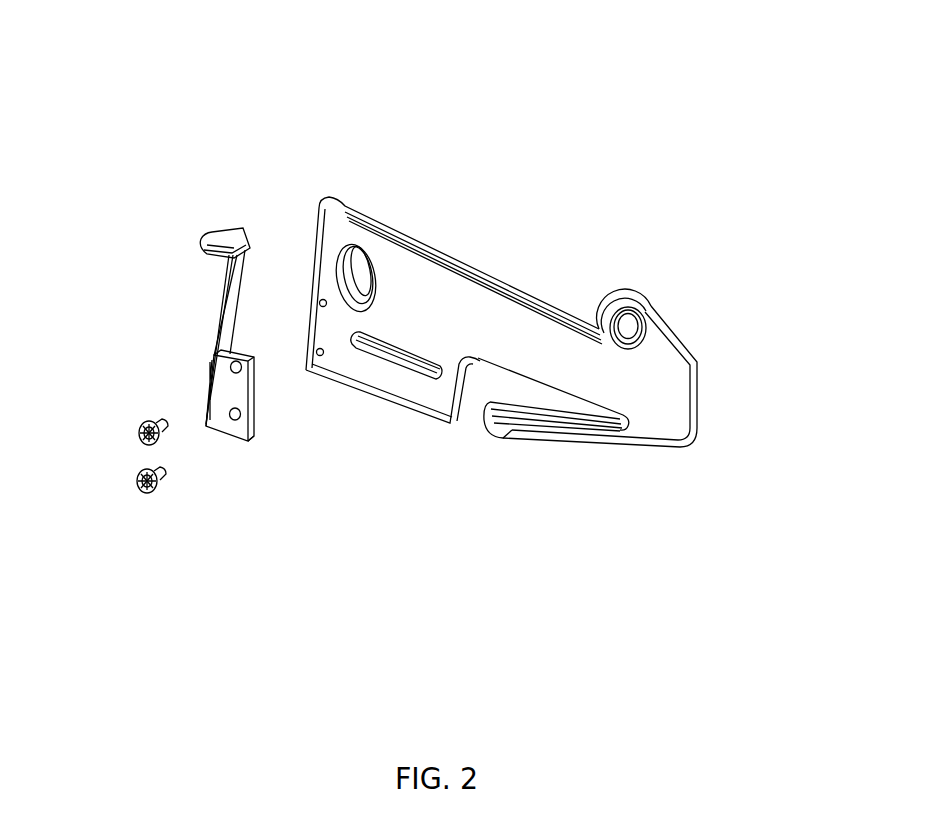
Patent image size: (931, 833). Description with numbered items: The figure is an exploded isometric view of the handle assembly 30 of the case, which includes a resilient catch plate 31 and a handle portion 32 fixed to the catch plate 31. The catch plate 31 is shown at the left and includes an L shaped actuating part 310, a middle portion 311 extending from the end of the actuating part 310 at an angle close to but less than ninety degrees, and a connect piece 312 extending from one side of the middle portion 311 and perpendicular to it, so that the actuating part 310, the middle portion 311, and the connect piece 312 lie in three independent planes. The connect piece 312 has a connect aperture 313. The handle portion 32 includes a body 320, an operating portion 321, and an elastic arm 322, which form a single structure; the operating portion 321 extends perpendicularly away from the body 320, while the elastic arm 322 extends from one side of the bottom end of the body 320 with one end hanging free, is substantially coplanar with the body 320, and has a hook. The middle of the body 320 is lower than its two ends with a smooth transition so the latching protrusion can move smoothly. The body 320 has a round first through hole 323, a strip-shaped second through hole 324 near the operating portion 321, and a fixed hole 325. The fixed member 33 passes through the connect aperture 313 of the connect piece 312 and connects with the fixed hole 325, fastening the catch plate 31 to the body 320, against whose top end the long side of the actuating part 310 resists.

The handle assembly 30 is at (382, 119).
The catch plate 31 is at (194, 238).
The actuating part 310 is at (238, 250).
The middle portion 311 is at (256, 440).
The connect piece 312 is at (233, 435).
The connect aperture 313 is at (218, 407).
The handle portion 32 is at (664, 293).
The body 320 is at (667, 380).
The operating portion 321 is at (410, 372).
The elastic arm 322 is at (570, 433).
The first through hole 323 is at (632, 323).
The second through hole 324 is at (360, 270).
The fixed hole 325 is at (321, 307).
The fixed member 33 is at (130, 476).